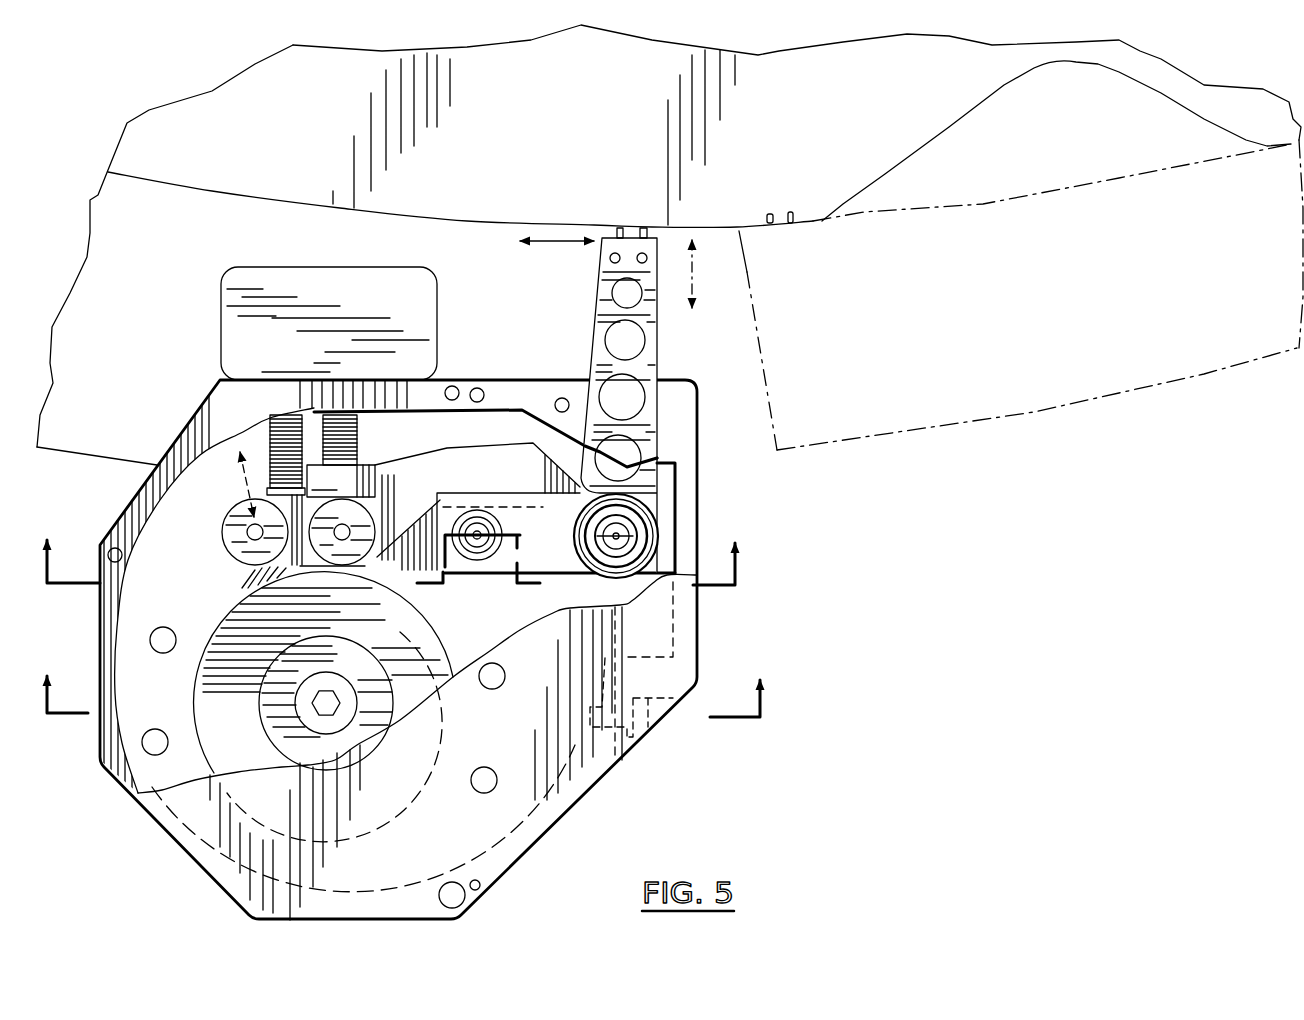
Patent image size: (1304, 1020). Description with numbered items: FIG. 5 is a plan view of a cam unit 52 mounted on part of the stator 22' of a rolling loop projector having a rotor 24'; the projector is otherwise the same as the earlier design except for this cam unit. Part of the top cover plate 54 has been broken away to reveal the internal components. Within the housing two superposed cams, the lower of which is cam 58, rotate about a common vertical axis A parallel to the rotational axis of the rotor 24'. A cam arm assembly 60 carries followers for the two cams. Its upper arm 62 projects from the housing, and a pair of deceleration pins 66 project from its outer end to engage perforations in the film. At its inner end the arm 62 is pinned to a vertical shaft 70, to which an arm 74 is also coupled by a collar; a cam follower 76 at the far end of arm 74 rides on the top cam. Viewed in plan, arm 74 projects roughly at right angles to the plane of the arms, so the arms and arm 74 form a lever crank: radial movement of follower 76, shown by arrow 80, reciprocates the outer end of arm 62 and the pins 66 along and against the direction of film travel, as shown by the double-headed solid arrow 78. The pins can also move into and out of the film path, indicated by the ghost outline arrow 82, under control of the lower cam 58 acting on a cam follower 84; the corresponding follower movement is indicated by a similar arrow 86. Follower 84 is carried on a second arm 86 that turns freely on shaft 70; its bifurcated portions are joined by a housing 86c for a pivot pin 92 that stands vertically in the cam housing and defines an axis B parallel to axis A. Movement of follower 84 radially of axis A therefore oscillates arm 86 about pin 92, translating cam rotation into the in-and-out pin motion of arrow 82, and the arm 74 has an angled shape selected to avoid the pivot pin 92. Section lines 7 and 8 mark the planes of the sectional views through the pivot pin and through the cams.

The stator 22' is at (97, 461).
The rotor 24' is at (670, 237).
The cam unit 52 is at (84, 662).
The top cover plate 54 is at (663, 638).
The lower cam 58 is at (240, 585).
The cam arm assembly 60 is at (670, 358).
The upper arm 62 is at (660, 338).
The deceleration pins 66 is at (643, 228).
The vertical shaft 70 is at (633, 537).
The arm 74 is at (440, 448).
The cam follower 76 is at (333, 558).
The double-headed solid arrow 78 is at (560, 248).
The arrow 80 is at (342, 519).
The double-headed ghost outline arrow 82 is at (697, 278).
The cam follower 84 is at (222, 540).
The second arm 86 is at (233, 503).
The housing for pivot pin 86c is at (510, 513).
The pivot pin 92 is at (490, 567).
The section line 7- 7 is at (395, 568).
The section line 8- 8 is at (405, 704).
The axis A- A is at (326, 704).
The axis B- B is at (472, 553).